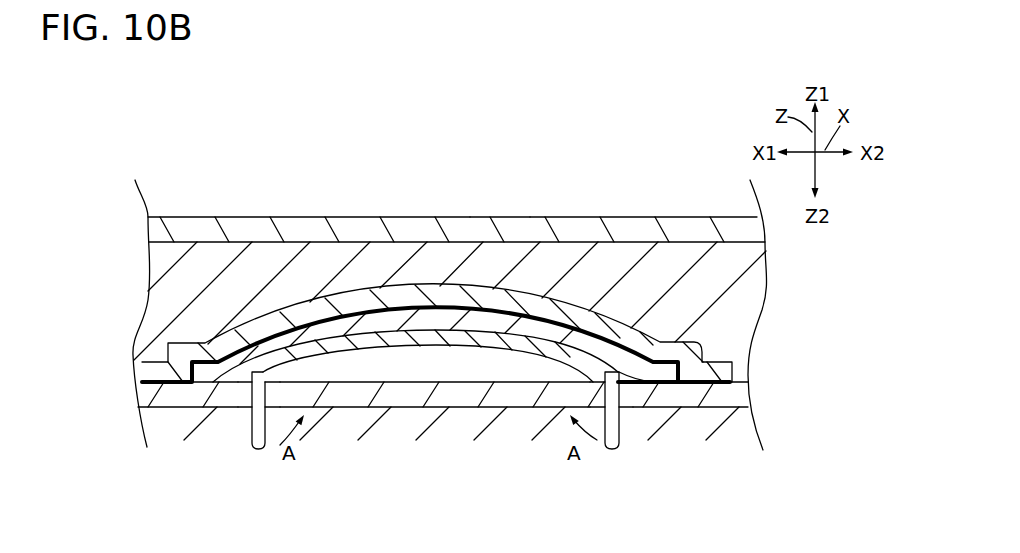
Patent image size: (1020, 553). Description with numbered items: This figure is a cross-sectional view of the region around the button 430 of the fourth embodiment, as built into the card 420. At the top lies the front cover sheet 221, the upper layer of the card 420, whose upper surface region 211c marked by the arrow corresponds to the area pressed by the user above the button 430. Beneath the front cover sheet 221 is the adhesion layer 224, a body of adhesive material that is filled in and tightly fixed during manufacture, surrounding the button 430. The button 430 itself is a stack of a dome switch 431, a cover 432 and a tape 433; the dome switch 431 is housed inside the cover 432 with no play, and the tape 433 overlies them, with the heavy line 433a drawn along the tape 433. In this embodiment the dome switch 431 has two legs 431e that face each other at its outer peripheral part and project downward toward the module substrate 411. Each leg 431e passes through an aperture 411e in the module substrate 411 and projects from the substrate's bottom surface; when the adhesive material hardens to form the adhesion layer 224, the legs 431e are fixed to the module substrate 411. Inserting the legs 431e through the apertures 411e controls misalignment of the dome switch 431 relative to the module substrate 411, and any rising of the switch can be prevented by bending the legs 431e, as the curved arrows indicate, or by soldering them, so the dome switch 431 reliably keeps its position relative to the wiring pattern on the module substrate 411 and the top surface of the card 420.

The card 420 is at (669, 128).
The front cover sheet 221 is at (190, 227).
The surface of upper layer 211c is at (499, 196).
The adhesion layer 224 is at (737, 300).
The button 430 is at (284, 298).
The tape 433 is at (343, 302).
The electrode layer 433a is at (402, 306).
The cover 432 is at (430, 318).
The dome switch 431 is at (382, 342).
The leg 431e is at (258, 450).
The module substrate 411 is at (167, 400).
The aperture 411e is at (250, 396).